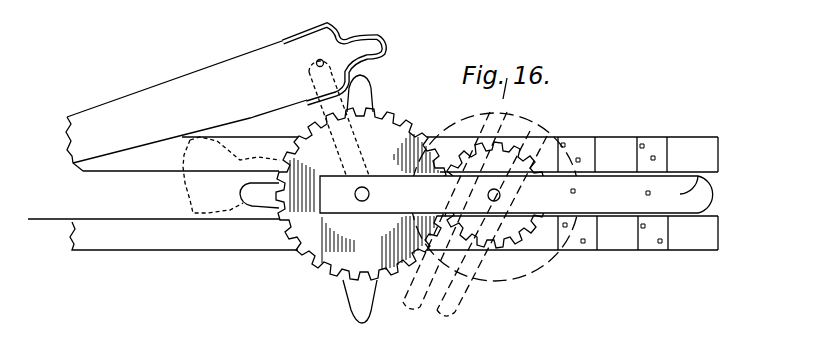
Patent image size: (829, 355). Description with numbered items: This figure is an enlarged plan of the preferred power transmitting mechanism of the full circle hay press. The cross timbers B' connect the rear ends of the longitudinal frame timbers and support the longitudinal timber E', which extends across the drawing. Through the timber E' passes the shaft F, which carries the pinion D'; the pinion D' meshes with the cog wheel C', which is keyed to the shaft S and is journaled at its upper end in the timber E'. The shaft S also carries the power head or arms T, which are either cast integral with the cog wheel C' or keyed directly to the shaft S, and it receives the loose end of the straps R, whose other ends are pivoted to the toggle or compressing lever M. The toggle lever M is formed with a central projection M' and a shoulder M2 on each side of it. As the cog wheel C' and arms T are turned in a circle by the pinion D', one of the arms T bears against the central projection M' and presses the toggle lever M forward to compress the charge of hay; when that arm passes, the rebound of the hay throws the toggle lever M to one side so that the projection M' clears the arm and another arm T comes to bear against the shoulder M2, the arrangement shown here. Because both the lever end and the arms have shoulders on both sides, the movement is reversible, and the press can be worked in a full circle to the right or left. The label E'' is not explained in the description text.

The toggle lever M is at (196, 98).
The central projection M' is at (352, 64).
The shoulder M2 is at (346, 37).
The power head or arms T is at (362, 97).
The straps R is at (320, 114).
The cog wheel C' is at (362, 194).
The shaft S is at (366, 190).
The longitudinal timber E' is at (516, 194).
The shaft F is at (500, 195).
The pinion D' is at (495, 206).
The cross timbers B' is at (373, 181).
The bar end E'' is at (680, 191).